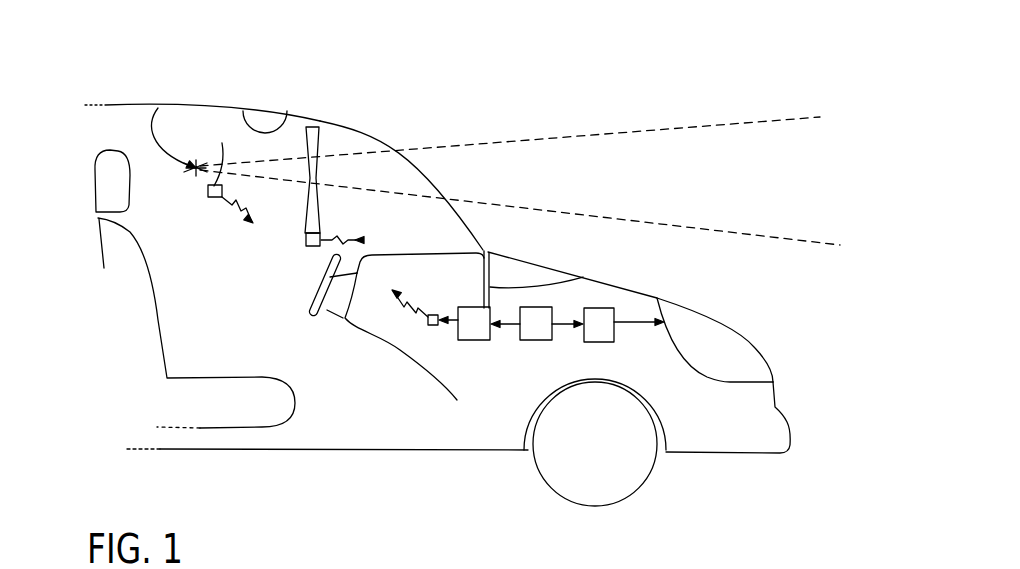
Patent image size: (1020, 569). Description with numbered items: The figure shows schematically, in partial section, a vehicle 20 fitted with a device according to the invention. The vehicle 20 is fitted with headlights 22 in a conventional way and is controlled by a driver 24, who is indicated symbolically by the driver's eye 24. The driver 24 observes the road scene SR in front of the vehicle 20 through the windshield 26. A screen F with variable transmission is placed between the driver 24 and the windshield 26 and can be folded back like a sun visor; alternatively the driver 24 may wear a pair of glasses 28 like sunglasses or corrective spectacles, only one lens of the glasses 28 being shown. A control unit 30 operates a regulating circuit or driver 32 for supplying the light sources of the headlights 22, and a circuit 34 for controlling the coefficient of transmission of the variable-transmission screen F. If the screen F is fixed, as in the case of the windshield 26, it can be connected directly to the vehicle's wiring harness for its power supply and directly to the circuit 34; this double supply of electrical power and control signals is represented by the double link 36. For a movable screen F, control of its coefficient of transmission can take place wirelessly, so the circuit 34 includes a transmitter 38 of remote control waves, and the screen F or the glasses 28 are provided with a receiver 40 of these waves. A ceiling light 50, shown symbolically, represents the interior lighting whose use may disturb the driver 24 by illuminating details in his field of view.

The vehicle 20 is at (620, 80).
The headlights 22 is at (703, 330).
The driver 24 is at (186, 106).
The windshield 26 is at (465, 218).
The pair of glasses 28 is at (222, 143).
The control unit 30 is at (530, 343).
The regulating circuit or driver 32 is at (603, 342).
The circuit for controlling the coefficient of transmission 34 is at (472, 340).
The double link 36 is at (583, 277).
The transmitter 38 is at (430, 321).
The receiver 40 is at (209, 196).
The ceiling light 50 is at (259, 117).
The screen F is at (320, 131).
The road scene SR is at (848, 196).